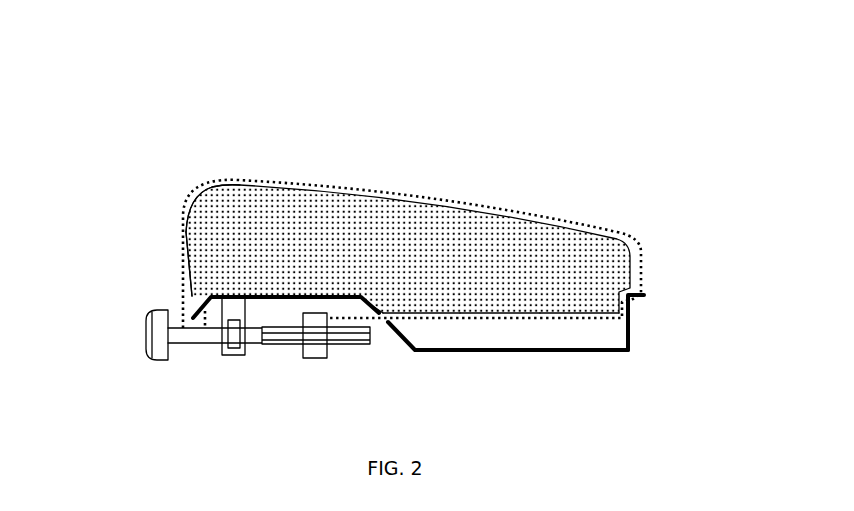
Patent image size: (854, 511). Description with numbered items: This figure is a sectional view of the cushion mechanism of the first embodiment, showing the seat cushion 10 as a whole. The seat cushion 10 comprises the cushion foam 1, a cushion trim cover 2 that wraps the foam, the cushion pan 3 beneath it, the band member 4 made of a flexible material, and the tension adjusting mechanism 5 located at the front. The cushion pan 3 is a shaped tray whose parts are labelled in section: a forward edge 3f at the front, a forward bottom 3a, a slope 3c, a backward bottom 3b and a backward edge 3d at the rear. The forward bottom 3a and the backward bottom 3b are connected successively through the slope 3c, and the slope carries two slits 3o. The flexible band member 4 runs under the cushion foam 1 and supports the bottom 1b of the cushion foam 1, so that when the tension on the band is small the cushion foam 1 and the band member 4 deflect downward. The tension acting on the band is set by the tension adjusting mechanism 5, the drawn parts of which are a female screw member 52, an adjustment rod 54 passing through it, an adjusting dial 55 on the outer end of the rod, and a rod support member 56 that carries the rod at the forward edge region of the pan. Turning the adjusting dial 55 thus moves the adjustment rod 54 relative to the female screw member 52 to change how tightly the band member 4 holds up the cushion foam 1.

The seat cushion 10 is at (117, 62).
The cushion foam 1 is at (545, 268).
The bottom of the cushion foam 1b is at (501, 324).
The cushion trim cover 2 is at (628, 239).
The cushion pan 3 is at (540, 123).
The forward bottom 3a is at (262, 300).
The slit 3o is at (381, 306).
The slope 3c is at (408, 337).
The backward bottom 3b is at (463, 350).
The backward edge 3d is at (628, 342).
The forward edge 3f is at (195, 316).
The band member 4 is at (518, 318).
The tension adjusting mechanism 5 is at (136, 300).
The female screw member 52 is at (317, 358).
The adjustment rod 54 is at (205, 345).
The adjusting dial 55 is at (158, 362).
The rod support member 56 is at (235, 357).